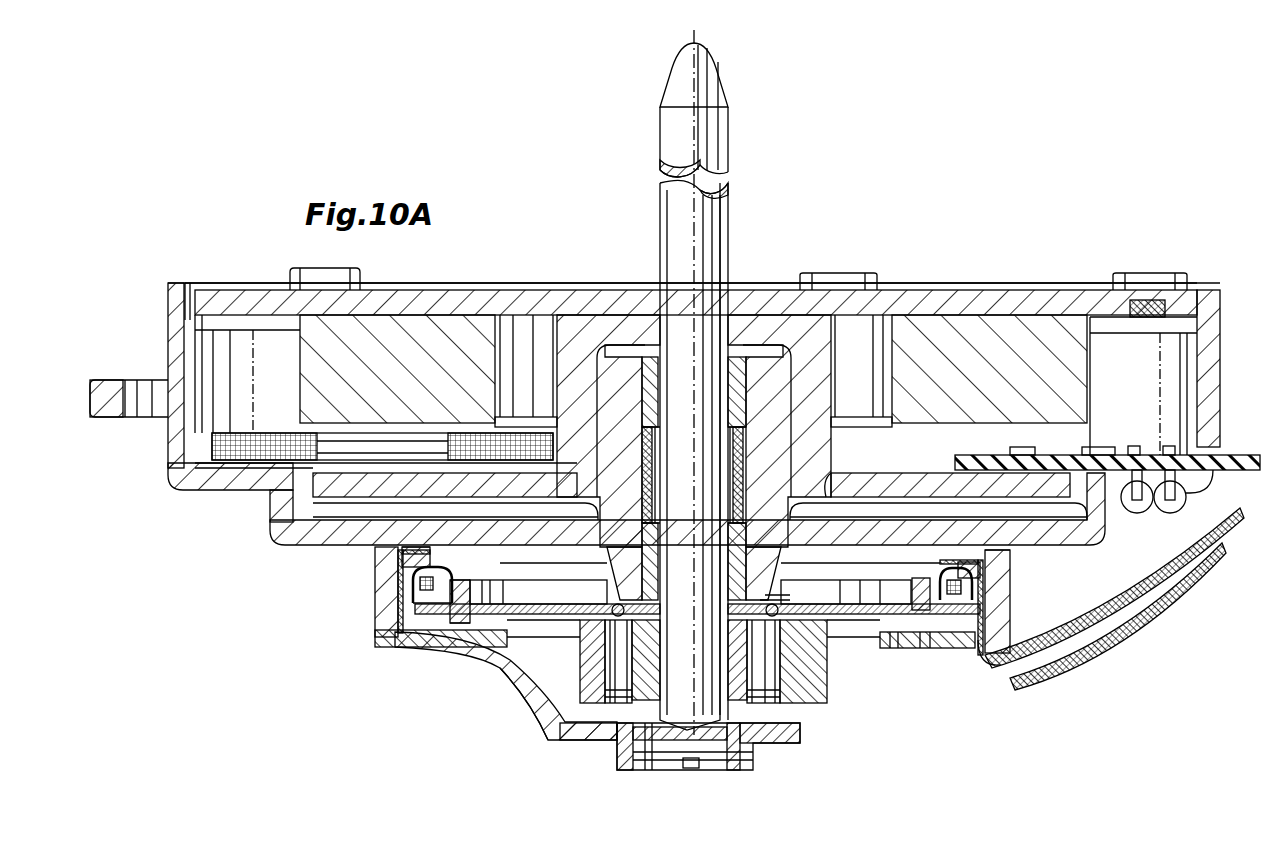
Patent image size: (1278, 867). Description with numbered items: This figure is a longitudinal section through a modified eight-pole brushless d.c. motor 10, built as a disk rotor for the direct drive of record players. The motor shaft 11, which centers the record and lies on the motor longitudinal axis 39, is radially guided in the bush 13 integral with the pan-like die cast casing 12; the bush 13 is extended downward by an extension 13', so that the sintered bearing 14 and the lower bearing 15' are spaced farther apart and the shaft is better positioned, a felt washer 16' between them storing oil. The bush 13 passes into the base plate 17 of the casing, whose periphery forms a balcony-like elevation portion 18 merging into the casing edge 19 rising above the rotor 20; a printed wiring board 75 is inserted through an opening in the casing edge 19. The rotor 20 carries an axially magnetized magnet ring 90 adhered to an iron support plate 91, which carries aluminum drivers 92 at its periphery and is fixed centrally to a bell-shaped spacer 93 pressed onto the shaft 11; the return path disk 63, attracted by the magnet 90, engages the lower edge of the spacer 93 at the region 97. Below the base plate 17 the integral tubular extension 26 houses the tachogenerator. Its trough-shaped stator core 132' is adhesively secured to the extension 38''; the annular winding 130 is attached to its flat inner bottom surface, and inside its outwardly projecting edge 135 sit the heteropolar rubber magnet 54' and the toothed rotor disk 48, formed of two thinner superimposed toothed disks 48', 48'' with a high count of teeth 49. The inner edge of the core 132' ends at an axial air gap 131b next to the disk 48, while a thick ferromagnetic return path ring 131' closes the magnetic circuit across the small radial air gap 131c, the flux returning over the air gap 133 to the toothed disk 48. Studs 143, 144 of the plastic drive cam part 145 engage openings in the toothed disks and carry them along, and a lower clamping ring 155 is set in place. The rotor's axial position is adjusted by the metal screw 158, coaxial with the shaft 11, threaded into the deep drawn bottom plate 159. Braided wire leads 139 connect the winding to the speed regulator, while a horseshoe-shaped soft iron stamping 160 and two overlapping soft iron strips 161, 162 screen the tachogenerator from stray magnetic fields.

The brushless d.c. motor 10 is at (215, 282).
The motor shaft 11 is at (722, 133).
The die cast casing 12 is at (185, 497).
The bush 13 is at (707, 457).
The extension 13' is at (782, 594).
The sintered bearing 14 is at (653, 385).
The bearing 15' is at (694, 561).
The bearing liner 16' is at (694, 470).
The base plate 17 is at (297, 548).
The balcony-like elevation portion 18 is at (237, 485).
The casing edge 19 is at (176, 350).
The rotor 20 is at (522, 282).
The tubular extension 26 is at (430, 603).
The turntable plate 38'' is at (697, 588).
The motor longitudinal axis 39 is at (710, 226).
The toothed disk 48 is at (438, 631).
The toothed disk 48' is at (923, 659).
The toothed disk 48'' is at (891, 655).
The teeth 49 is at (960, 648).
The rubber magnet 54' is at (694, 622).
The return path disk 63 is at (905, 490).
The printed wiring board 75 is at (1232, 465).
The magnet ring 90 is at (413, 322).
The iron support plate 91 is at (262, 300).
The aluminum drivers 92 is at (310, 272).
The bell-shaped spacer 93 is at (807, 366).
The yoke junction 97 is at (827, 472).
The annular winding 130 is at (378, 637).
The ferromagnetic return path ring 131' is at (705, 583).
The axial air gap 131b is at (448, 612).
The radial air gap 131c is at (462, 585).
The stator core 132' is at (726, 538).
The air gap 133 is at (410, 632).
The outwardly projecting edge 135 is at (988, 660).
The braided wire leads 139 is at (1085, 645).
The stud 143 is at (603, 616).
The stud 144 is at (822, 648).
The drive cam disk 145 is at (552, 712).
The lower clamping ring 155 is at (612, 740).
The screw 158 is at (760, 758).
The bottom plate 159 is at (525, 690).
The flat stamping 160 is at (402, 552).
The soft iron strip 161 is at (415, 580).
The soft iron strip 162 is at (422, 592).